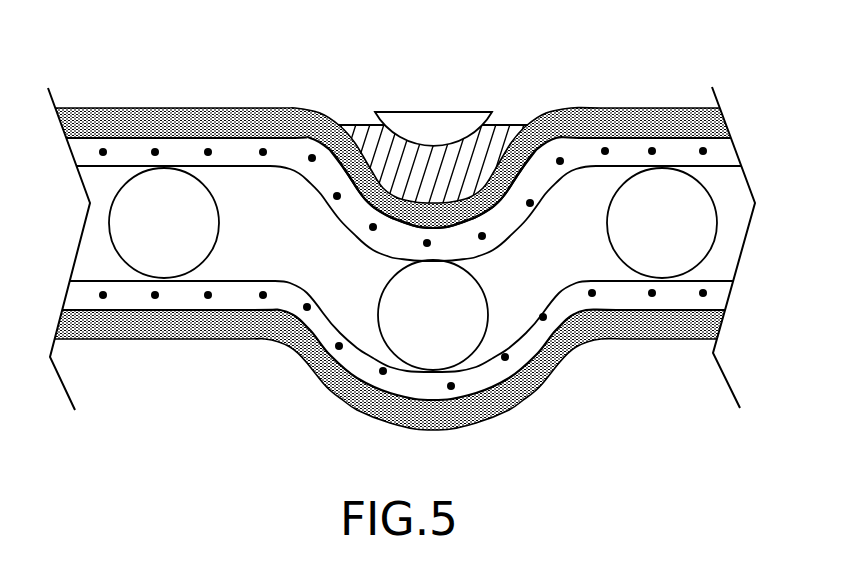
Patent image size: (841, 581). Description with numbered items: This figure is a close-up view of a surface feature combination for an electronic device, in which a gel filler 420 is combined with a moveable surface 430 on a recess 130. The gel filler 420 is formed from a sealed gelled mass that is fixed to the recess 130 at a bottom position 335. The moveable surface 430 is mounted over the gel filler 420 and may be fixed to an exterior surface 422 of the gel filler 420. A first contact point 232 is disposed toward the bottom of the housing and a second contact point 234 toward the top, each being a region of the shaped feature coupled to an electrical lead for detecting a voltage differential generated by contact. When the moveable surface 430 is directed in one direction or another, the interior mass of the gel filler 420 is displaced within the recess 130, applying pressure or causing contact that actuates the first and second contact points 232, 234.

The recess 130 is at (437, 187).
The first contact point 232 is at (349, 165).
The second contact point 234 is at (517, 165).
The bottom position 335 is at (412, 211).
The gel filler 420 is at (478, 203).
The exterior surface 422 is at (388, 203).
The moveable surface 430 is at (407, 112).